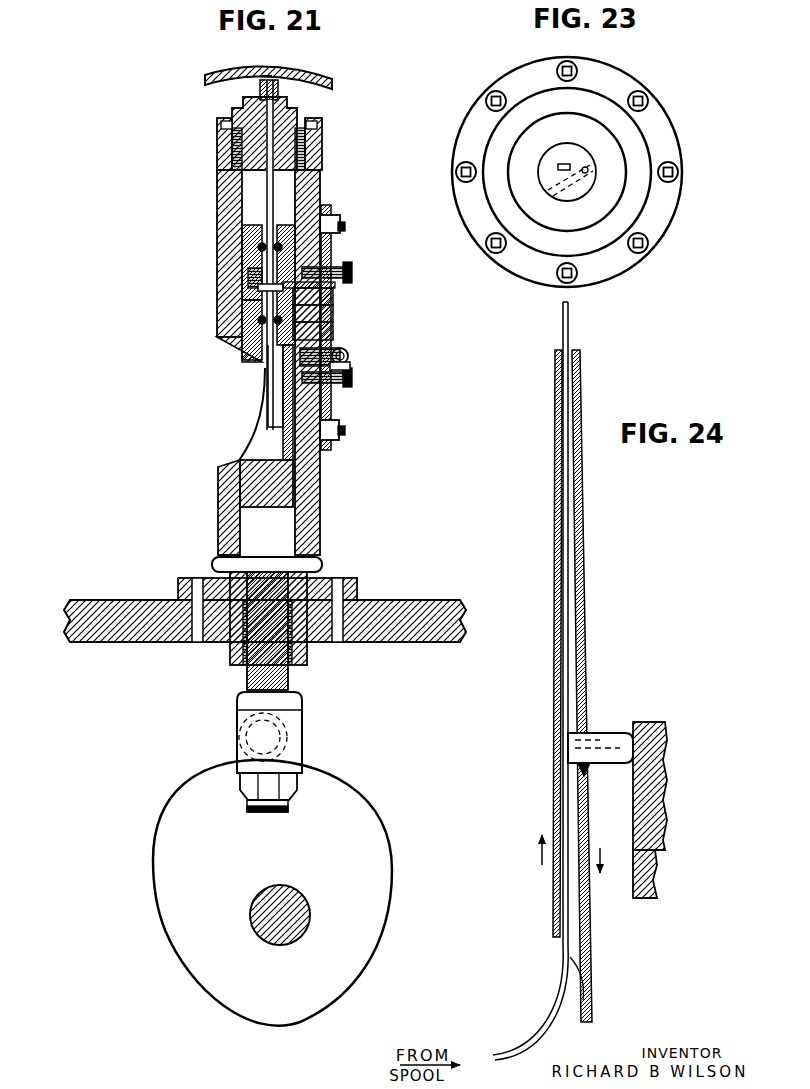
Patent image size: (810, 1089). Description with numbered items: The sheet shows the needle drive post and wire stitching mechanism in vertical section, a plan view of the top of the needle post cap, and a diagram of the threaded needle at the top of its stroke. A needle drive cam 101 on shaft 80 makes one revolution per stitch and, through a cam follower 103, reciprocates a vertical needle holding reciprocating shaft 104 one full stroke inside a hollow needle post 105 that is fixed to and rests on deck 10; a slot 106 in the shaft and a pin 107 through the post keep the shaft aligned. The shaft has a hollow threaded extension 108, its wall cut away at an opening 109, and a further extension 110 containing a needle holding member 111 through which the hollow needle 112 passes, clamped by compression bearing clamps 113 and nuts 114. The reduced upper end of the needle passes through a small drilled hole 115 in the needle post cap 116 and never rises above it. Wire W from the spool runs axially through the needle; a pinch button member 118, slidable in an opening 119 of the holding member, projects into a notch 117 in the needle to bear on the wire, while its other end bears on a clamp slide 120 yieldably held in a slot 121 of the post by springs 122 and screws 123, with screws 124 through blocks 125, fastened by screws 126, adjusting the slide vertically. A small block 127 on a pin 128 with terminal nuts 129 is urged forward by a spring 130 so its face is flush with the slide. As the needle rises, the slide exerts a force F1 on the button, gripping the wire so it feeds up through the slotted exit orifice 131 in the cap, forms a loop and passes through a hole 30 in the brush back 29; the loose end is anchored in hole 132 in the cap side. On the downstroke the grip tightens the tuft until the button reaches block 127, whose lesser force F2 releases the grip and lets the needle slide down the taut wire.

In FIG. 21, the deck 10 is at (385, 607).
In FIG. 21, the brush back 29 is at (324, 77).
In FIG. 21, the hole in brush back 30 is at (270, 71).
In FIG. 21, the shaft 80 is at (310, 904).
In FIG. 21, the needle drive cam 101 is at (356, 806).
In FIG. 21, the cam follower 103 is at (303, 724).
In FIG. 21, the needle holding reciprocating shaft 104 is at (283, 677).
In FIG. 21, the needle post 105 is at (318, 533).
In FIG. 21, the slot 106 is at (250, 533).
In FIG. 21, the pin 107 is at (312, 569).
In FIG. 21, the hollow threaded extension 108 is at (243, 462).
In FIG. 21, the opening 109 is at (268, 417).
In FIG. 21, the further extension 110 is at (247, 296).
In FIG. 21, the needle holding member 111 is at (253, 277).
In FIG. 21, the hollow needle 112 is at (262, 185).
In FIG. 24, the hollow needle 112 is at (582, 578).
In FIG. 21, the compression bearing clamps 113 is at (243, 250).
In FIG. 21, the nuts 114 is at (251, 222).
In FIG. 21, the drilled hole 115 is at (294, 113).
In FIG. 21, the needle post cap 116 is at (230, 119).
In FIG. 23, the needle post cap 116 is at (663, 137).
In FIG. 21, the notch 117 is at (250, 320).
In FIG. 24, the notch 117 is at (585, 770).
In FIG. 21, the pinch button member 118 is at (334, 298).
In FIG. 24, the pinch button member 118 is at (598, 733).
In FIG. 21, the opening 119 is at (334, 315).
In FIG. 21, the clamp slide 120 is at (334, 332).
In FIG. 24, the clamp slide 120 is at (666, 740).
In FIG. 21, the slot 121 is at (335, 288).
In FIG. 21, the springs 122 is at (338, 265).
In FIG. 21, the screws 123 is at (354, 271).
In FIG. 21, the screws 124 is at (334, 210).
In FIG. 21, the blocks 125 is at (342, 220).
In FIG. 21, the screws 126 is at (346, 228).
In FIG. 21, the block 127 is at (264, 376).
In FIG. 24, the block 127 is at (655, 862).
In FIG. 21, the pin 128 is at (348, 360).
In FIG. 21, the terminal nuts 129 is at (350, 352).
In FIG. 21, the spring 130 is at (352, 368).
In FIG. 21, the slotted exit orifice 131 is at (263, 81).
In FIG. 23, the slotted exit orifice 131 is at (572, 170).
In FIG. 23, the hole 132 is at (590, 170).
In FIG. 24, the wire W is at (569, 325).
In FIG. 24, the force F1 is at (672, 782).
In FIG. 24, the force F2 is at (663, 875).